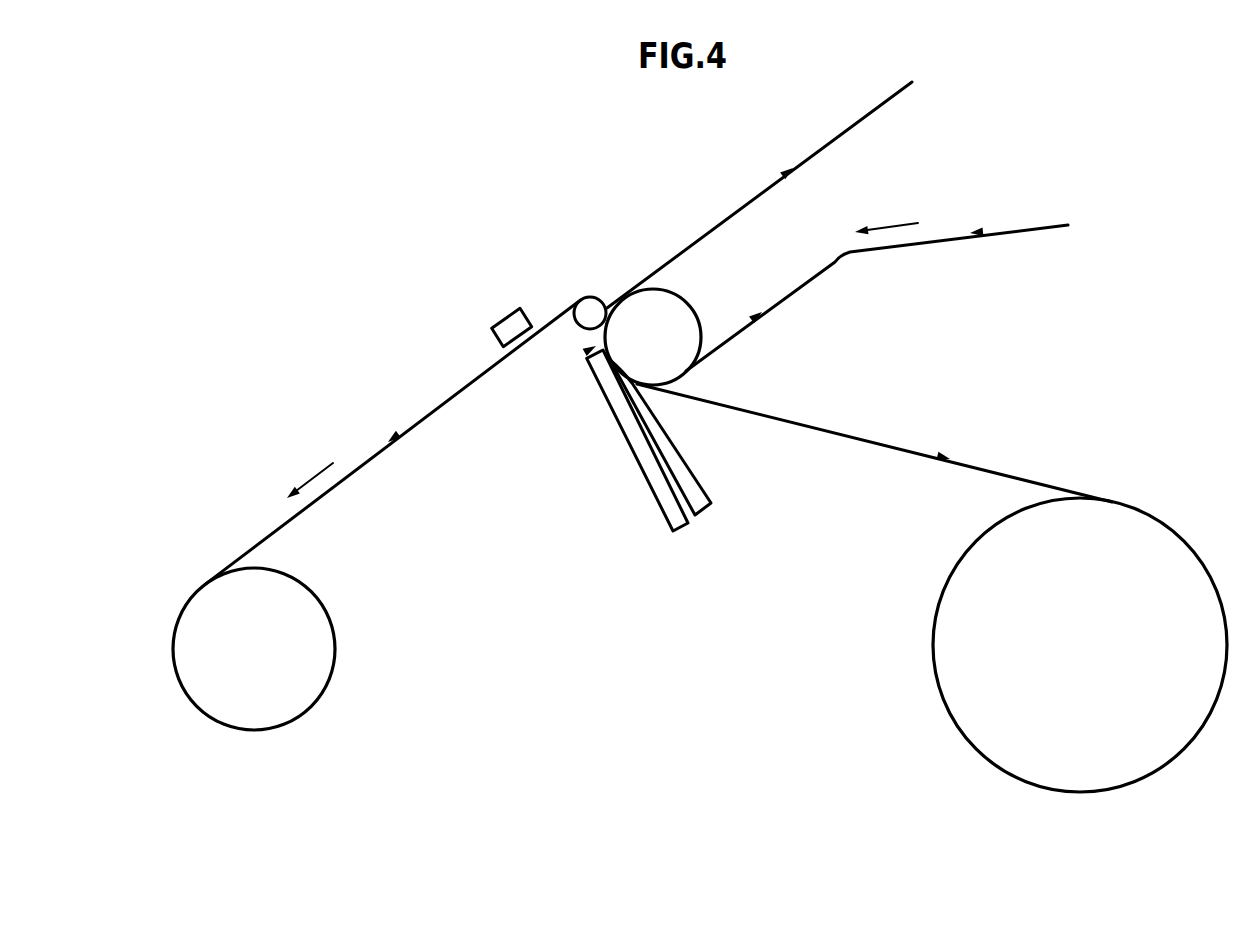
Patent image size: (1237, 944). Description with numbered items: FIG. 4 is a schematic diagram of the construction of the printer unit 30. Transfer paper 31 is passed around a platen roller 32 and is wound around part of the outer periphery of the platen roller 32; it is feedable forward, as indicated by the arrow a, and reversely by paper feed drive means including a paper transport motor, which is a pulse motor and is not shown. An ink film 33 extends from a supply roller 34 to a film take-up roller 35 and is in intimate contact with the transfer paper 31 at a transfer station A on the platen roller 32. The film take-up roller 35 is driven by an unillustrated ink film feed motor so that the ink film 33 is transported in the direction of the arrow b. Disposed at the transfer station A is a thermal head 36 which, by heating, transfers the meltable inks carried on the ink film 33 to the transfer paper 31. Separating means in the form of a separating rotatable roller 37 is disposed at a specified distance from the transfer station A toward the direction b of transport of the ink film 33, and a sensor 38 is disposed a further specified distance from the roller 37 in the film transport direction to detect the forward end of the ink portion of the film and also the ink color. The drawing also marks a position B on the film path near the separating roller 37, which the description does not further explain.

The printer unit 30 is at (489, 113).
The transfer paper 31 is at (762, 195).
The platen roller 32 is at (665, 292).
The ink film 33 is at (1027, 478).
The supply roller 34 is at (953, 673).
The film take-up roller 35 is at (317, 667).
The thermal head 36 is at (632, 442).
The separating rotatable roller 37 is at (579, 328).
The sensor 38 is at (500, 322).
The transfer station A is at (590, 349).
The roller B is at (608, 284).
The forward paper feed direction a is at (886, 214).
The ink film transport direction b is at (310, 472).